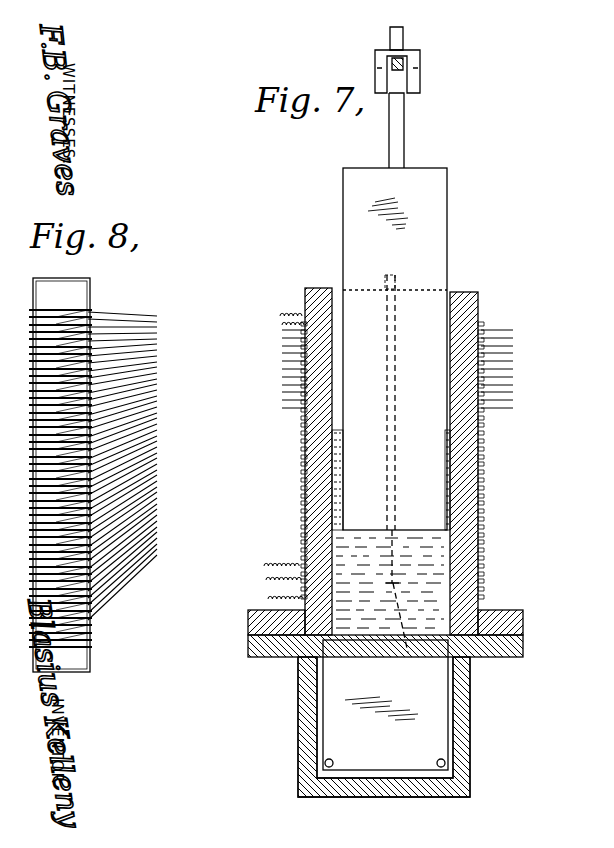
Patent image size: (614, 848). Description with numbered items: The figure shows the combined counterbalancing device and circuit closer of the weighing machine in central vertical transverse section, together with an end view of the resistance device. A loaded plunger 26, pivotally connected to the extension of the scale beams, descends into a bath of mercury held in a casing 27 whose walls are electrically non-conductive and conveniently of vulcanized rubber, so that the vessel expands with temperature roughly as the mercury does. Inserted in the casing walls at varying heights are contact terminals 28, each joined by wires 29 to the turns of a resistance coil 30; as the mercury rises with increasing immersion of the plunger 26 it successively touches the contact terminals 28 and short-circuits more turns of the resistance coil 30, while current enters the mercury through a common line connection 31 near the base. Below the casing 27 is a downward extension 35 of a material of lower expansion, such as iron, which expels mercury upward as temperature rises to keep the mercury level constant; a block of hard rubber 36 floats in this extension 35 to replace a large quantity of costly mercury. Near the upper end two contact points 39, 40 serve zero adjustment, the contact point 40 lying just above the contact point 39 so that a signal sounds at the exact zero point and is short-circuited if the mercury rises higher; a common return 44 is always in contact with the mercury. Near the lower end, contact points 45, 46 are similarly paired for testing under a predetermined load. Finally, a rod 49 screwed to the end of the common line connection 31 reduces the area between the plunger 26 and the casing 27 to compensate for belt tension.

In FIG. 7, the plunger 26 is at (395, 349).
In FIG. 7, the casing 27 is at (473, 308).
In FIG. 7, the contact terminals 28 is at (480, 442).
In FIG. 7, the wires 29 is at (295, 386).
In FIG. 8, the wires 29 is at (157, 367).
In FIG. 8, the resistance coil 30 is at (78, 310).
In FIG. 7, the common line connection 31 is at (410, 629).
In FIG. 7, the downward extension 35 is at (470, 720).
In FIG. 7, the block of hard rubber 36 is at (385, 705).
In FIG. 7, the contact point 39 is at (302, 327).
In FIG. 7, the contact point 40 is at (303, 313).
In FIG. 7, the common return 44 is at (303, 600).
In FIG. 7, the contact point 45 is at (300, 567).
In FIG. 7, the contact point 46 is at (300, 577).
In FIG. 7, the rod 49 is at (397, 384).